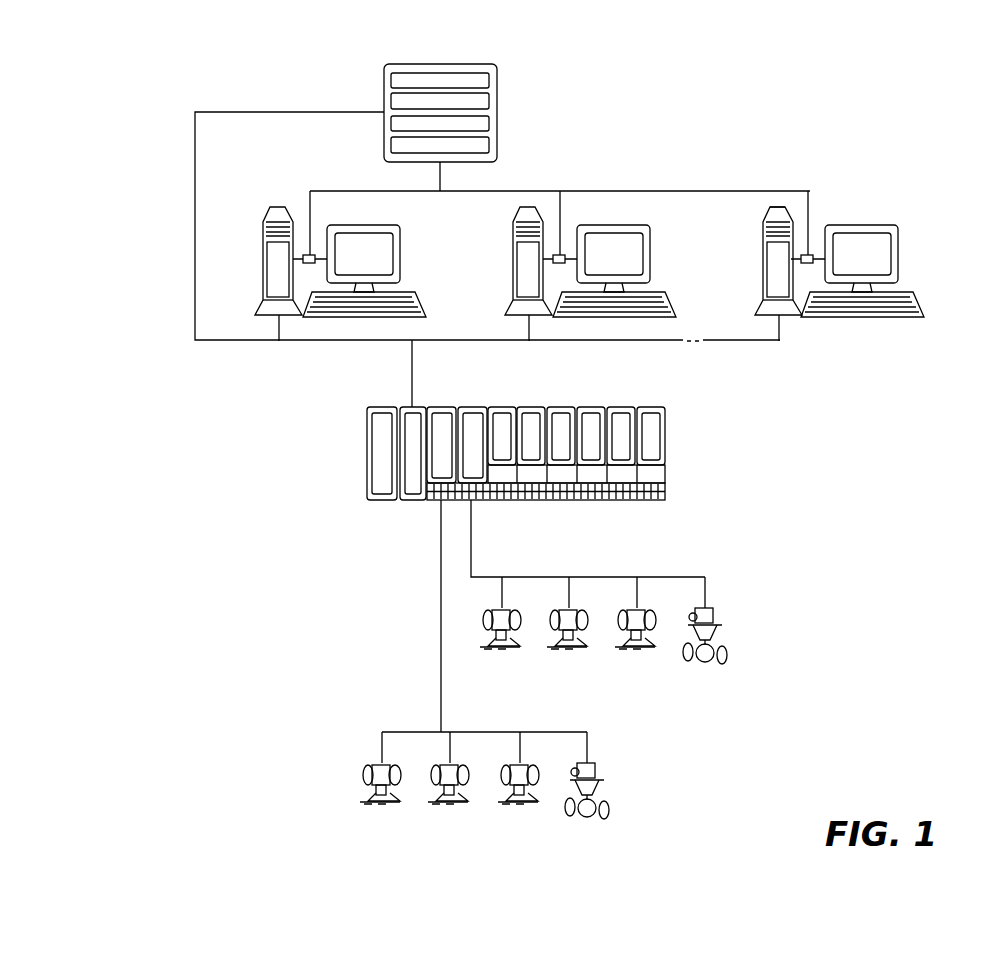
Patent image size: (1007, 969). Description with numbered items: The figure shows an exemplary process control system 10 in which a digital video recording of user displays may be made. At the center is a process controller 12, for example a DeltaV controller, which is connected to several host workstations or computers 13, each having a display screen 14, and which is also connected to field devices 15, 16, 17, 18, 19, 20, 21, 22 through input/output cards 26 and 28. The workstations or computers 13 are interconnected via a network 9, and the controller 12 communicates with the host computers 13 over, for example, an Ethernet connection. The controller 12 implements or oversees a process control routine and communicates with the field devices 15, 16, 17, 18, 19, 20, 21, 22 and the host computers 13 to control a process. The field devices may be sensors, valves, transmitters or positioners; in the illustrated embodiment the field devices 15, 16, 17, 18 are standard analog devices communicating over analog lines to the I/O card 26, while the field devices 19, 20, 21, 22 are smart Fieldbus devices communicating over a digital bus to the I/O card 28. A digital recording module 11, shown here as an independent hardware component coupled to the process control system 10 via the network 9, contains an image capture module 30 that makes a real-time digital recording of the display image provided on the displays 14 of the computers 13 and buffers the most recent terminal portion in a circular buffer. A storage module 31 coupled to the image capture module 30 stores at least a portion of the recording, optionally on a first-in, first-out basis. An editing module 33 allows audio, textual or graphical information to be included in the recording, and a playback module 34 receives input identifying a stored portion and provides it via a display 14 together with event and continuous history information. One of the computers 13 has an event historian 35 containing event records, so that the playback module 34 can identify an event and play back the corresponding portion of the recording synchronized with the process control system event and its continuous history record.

The network 9 is at (597, 342).
The process control system 10 is at (686, 546).
The digital recording module 11 is at (384, 106).
The process controller 12 is at (408, 425).
The host workstation or computer 13 is at (263, 252).
The display screen 14 is at (400, 250).
The field device 15 is at (372, 803).
The field device 16 is at (440, 803).
The field device 17 is at (510, 803).
The field device 18 is at (588, 813).
The field device 19 is at (492, 648).
The field device 20 is at (559, 648).
The field device 21 is at (627, 648).
The field device 22 is at (706, 658).
The input/output card 26 is at (442, 410).
The input/output card 28 is at (472, 410).
The image capture module 30 is at (497, 79).
The storage module 31 is at (490, 101).
The editing module 33 is at (497, 123).
The playback module 34 is at (490, 146).
The event historian 35 is at (780, 207).